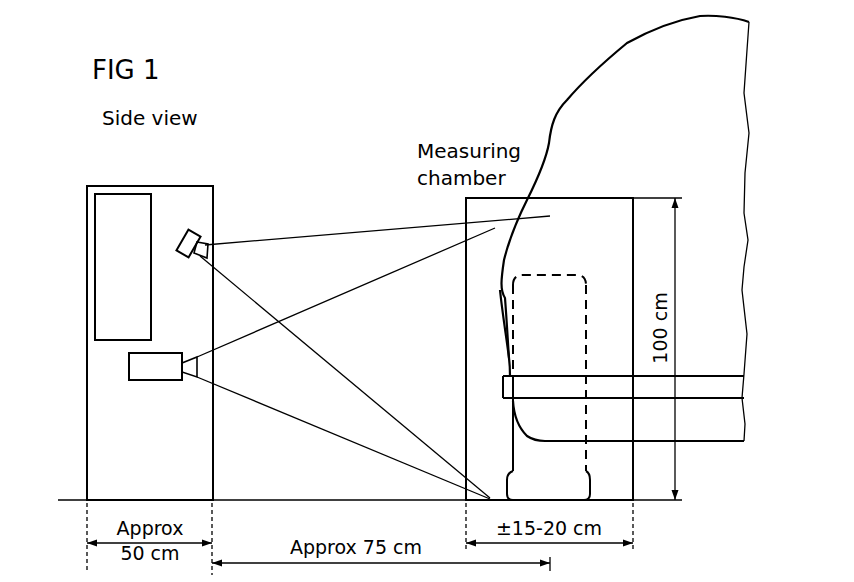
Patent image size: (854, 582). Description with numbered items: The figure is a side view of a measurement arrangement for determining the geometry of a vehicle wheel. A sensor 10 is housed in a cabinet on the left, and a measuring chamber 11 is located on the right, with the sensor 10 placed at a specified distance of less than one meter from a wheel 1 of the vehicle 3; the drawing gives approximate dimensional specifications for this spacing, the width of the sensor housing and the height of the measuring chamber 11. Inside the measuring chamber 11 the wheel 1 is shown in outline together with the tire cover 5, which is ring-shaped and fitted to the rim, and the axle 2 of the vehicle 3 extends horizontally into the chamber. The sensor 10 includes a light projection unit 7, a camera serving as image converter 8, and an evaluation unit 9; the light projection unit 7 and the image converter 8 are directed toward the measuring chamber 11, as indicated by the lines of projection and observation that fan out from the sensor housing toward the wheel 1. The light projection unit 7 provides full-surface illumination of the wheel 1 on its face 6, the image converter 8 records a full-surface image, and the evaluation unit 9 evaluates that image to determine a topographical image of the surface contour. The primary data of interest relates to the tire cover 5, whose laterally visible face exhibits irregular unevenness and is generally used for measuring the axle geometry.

The wheel 1 is at (557, 271).
The axle 2 is at (716, 380).
The vehicle 3 is at (570, 61).
The tire cover 5 is at (582, 314).
The face 6 is at (503, 322).
The light projection unit 7 is at (153, 386).
The image converter 8 is at (202, 229).
The evaluation unit 9 is at (157, 207).
The sensor 10 is at (86, 389).
The measuring chamber 11 is at (566, 196).